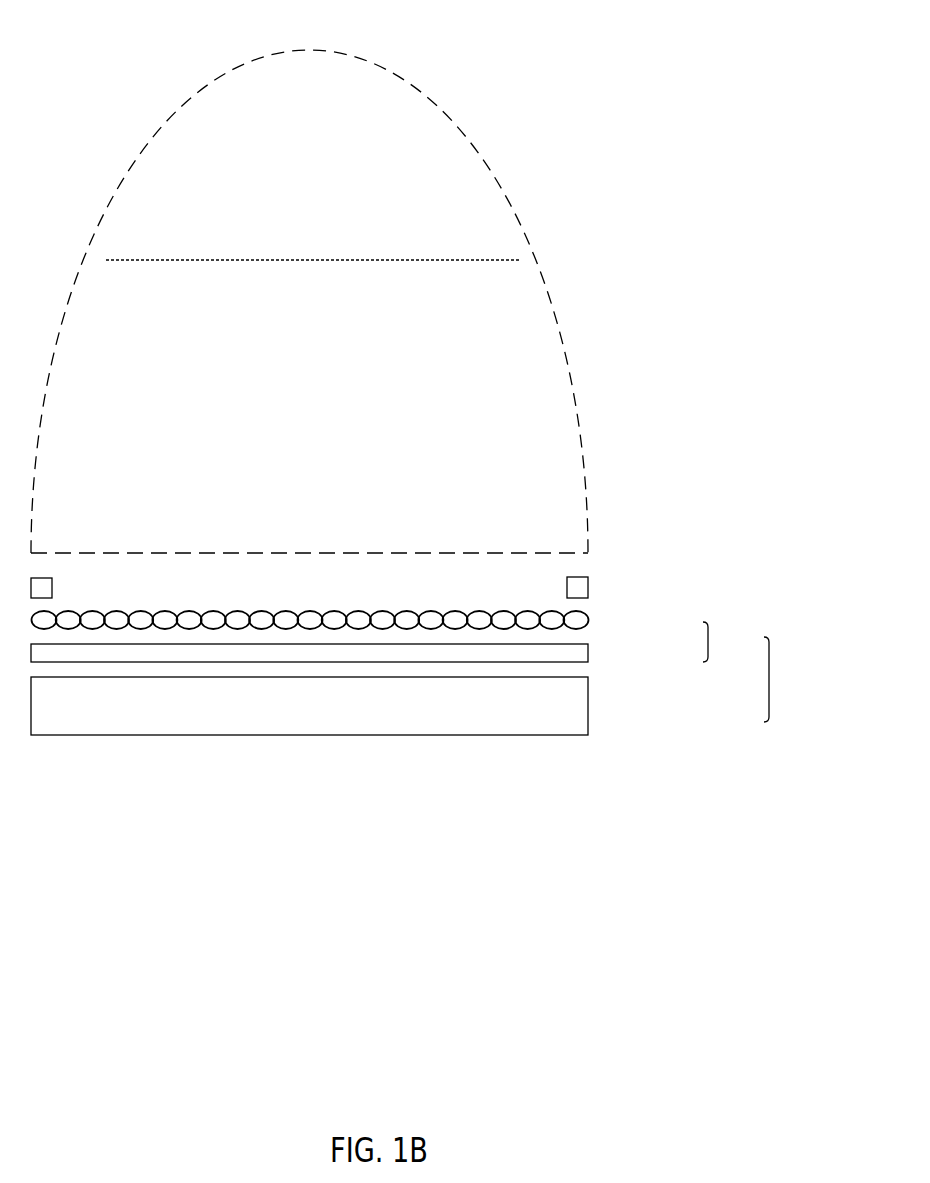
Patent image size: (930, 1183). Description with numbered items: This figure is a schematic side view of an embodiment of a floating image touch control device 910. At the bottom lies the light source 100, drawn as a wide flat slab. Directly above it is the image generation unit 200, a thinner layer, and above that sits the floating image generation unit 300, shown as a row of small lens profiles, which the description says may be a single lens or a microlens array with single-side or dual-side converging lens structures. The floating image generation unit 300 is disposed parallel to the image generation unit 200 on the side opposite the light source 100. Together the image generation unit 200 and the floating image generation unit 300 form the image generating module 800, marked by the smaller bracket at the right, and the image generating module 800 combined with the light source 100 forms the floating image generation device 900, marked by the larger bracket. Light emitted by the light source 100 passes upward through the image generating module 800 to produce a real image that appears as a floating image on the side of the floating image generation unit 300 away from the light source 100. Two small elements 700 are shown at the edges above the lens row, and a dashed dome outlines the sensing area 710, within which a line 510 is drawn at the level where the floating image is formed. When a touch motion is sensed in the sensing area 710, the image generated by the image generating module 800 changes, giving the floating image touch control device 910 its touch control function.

The floating image touch control device 910 is at (80, 42).
The sensing area 710 is at (338, 113).
The light shielding layer 510 is at (473, 259).
The spacer 700 is at (588, 590).
The floating image generation unit 300 is at (590, 620).
The image generation unit 200 is at (580, 650).
The image generating module 800 is at (729, 642).
The light source 100 is at (570, 720).
The floating image generation device 900 is at (790, 679).